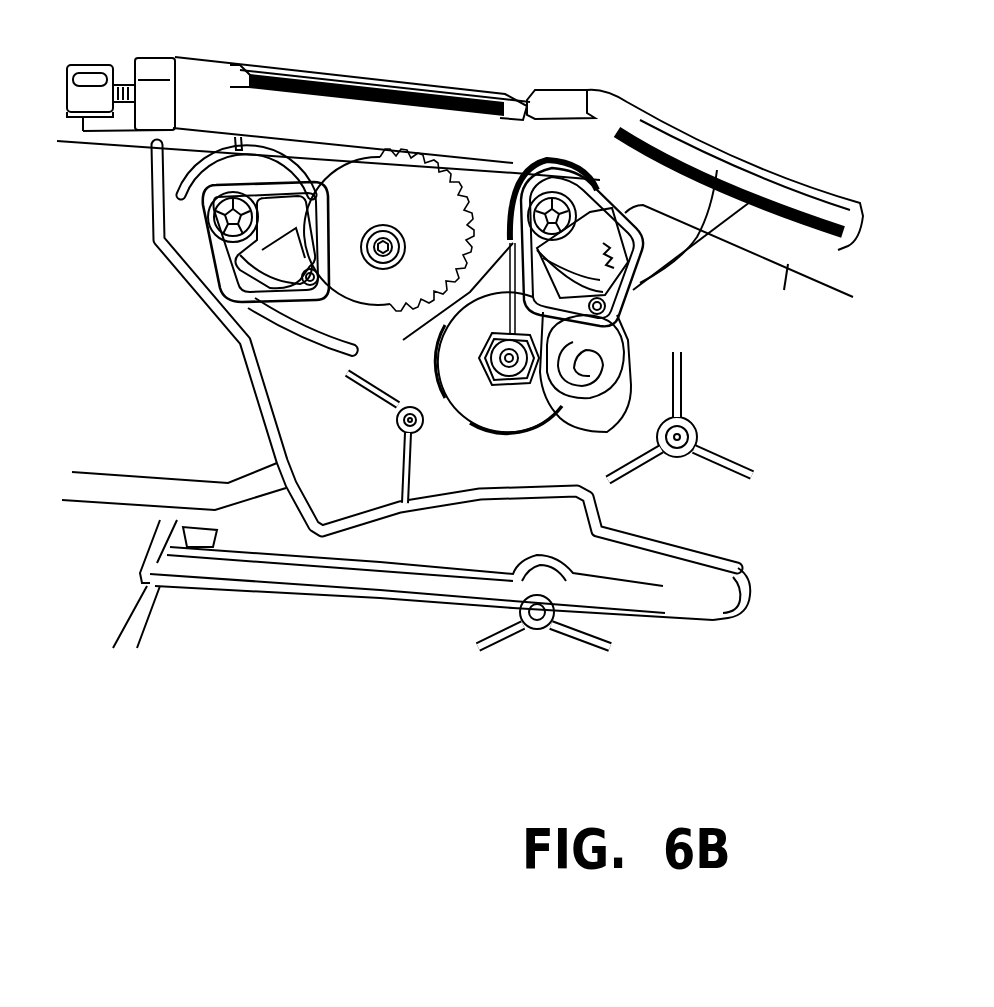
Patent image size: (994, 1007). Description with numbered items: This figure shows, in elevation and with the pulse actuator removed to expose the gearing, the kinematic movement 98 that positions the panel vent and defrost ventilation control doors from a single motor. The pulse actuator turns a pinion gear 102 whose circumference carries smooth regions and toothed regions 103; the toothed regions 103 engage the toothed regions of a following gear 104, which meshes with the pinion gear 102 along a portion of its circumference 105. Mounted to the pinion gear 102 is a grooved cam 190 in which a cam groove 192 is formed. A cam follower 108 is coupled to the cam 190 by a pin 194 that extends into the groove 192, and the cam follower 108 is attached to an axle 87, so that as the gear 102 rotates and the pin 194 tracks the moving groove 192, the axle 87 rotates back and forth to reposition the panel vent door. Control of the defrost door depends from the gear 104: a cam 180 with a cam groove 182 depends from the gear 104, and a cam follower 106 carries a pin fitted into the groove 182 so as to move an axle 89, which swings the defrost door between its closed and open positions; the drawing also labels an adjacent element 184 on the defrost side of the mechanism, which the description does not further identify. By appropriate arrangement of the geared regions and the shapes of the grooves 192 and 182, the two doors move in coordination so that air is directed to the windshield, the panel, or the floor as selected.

The axle 87 is at (603, 185).
The axle 89 is at (193, 165).
The kinematic movement 98 is at (768, 340).
The pinion gear 102 is at (507, 418).
The toothed regions 103 is at (455, 430).
The following gear 104 is at (366, 188).
The portion of circumference 105 is at (435, 173).
The cam follower 106 is at (350, 303).
The cam follower 108 is at (717, 170).
The cam 180 is at (270, 397).
The cam groove 182 is at (300, 335).
The cam housing 184 is at (297, 270).
The grooved cam 190 is at (633, 346).
The cam groove 192 is at (595, 394).
The pin 194 is at (757, 257).